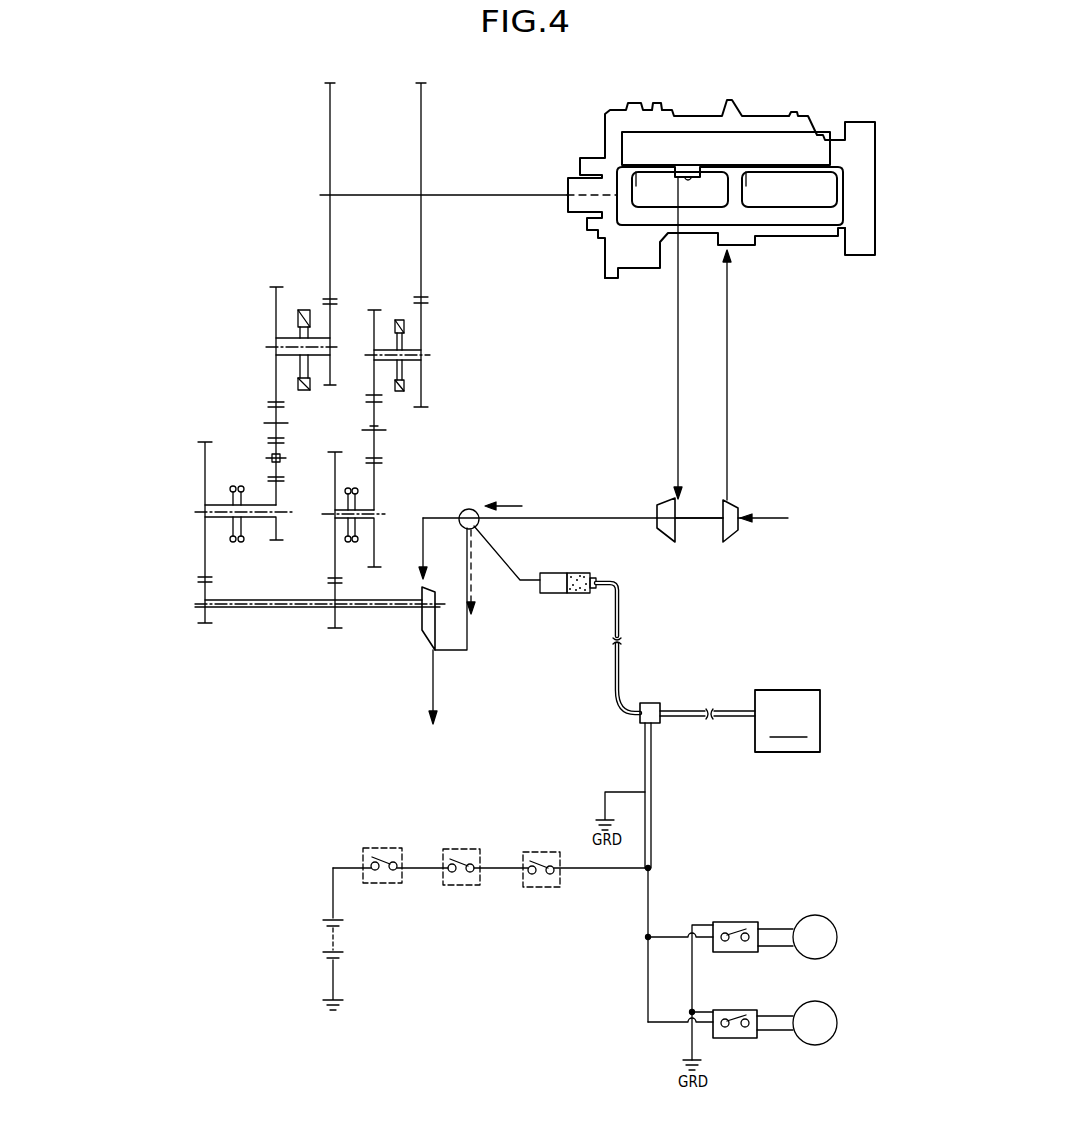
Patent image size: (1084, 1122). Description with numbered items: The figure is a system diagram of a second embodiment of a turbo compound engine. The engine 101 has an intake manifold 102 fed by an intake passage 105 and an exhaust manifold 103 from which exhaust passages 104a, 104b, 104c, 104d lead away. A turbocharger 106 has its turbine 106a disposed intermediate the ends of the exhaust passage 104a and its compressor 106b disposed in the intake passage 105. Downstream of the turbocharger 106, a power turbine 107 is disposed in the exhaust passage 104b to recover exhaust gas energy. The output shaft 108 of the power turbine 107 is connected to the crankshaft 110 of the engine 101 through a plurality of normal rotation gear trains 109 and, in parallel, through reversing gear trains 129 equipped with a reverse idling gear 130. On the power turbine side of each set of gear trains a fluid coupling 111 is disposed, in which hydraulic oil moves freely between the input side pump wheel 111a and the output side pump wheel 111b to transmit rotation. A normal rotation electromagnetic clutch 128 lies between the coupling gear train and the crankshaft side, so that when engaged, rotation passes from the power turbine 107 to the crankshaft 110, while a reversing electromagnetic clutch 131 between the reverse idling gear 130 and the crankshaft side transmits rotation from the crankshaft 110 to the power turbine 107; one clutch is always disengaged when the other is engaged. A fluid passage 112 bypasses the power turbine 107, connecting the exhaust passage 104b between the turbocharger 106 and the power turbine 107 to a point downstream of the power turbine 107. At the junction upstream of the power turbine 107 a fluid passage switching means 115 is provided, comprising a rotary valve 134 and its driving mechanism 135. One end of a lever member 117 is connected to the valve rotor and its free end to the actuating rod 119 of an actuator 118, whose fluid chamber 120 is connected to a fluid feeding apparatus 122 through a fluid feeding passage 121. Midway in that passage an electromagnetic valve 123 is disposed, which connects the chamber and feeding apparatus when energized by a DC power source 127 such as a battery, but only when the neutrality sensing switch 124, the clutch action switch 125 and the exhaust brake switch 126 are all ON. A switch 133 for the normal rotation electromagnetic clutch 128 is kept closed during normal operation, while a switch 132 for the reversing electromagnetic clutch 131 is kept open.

The engine 101 is at (728, 117).
The intake manifold 102 is at (778, 250).
The exhaust manifold 103 is at (690, 172).
The exhaust passage 104a is at (677, 333).
The exhaust passage 104b is at (560, 516).
The exhaust passage 104c is at (421, 576).
The exhaust passage 104d is at (433, 690).
The intake passage 105 is at (767, 516).
The turbocharger 106 is at (697, 545).
The turbine 106a is at (657, 505).
The compressor 106b is at (737, 530).
The power turbine 107 is at (425, 618).
The output shaft 108 is at (360, 622).
The normal rotation gear trains 109 is at (450, 143).
The crankshaft 110 is at (502, 193).
The fluid coupling 111 is at (358, 492).
The input side pump wheel 111a is at (250, 478).
The output side pump wheel 111b is at (236, 540).
The fluid passage 112 is at (467, 650).
The fluid passage switching means 115 is at (508, 467).
The lever member 117 is at (503, 562).
The actuator 118 is at (582, 577).
The actuating rod 119 is at (541, 580).
The fluid chamber 120 is at (574, 573).
The fluid feeding passage 121 is at (621, 623).
The fluid feeding apparatus 122 is at (787, 721).
The electromagnetic valve 123 is at (660, 689).
The neutrality sensing switch 124 is at (543, 852).
The clutch action switch 125 is at (470, 849).
The exhaust brake switch 126 is at (388, 848).
The DC power source 127 is at (343, 943).
The normal rotation electromagnetic clutch 128 is at (399, 318).
The reversing gear trains 129 is at (250, 260).
The reverse idling gear 130 is at (268, 423).
The reversing electromagnetic clutch 131 is at (304, 310).
The switch for reversing electromagnetic clutch 132 is at (748, 922).
The switch for normal rotation electromagnetic clutch 133 is at (748, 1010).
The rotary valve 134 is at (466, 508).
The driving mechanism 135 is at (764, 646).